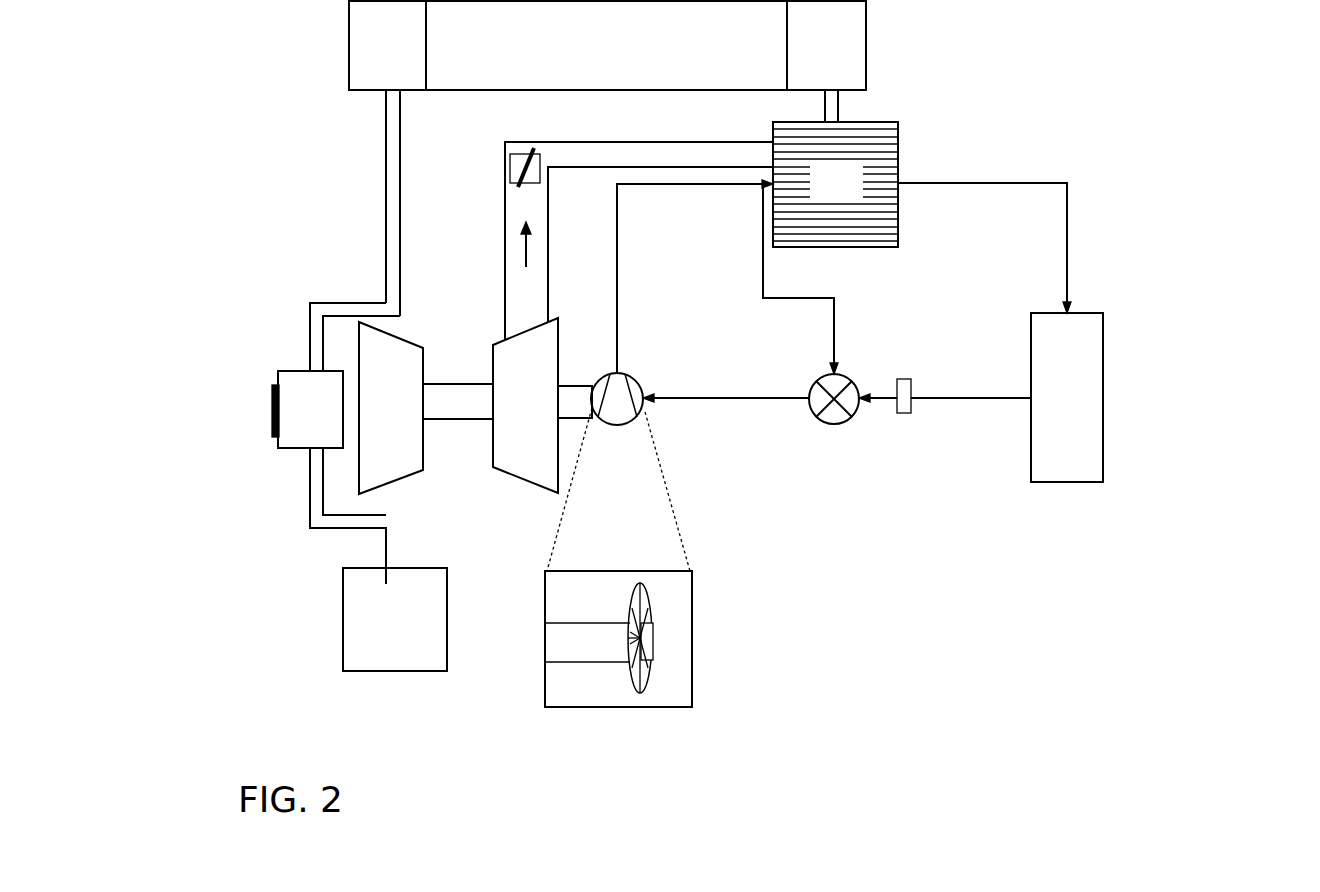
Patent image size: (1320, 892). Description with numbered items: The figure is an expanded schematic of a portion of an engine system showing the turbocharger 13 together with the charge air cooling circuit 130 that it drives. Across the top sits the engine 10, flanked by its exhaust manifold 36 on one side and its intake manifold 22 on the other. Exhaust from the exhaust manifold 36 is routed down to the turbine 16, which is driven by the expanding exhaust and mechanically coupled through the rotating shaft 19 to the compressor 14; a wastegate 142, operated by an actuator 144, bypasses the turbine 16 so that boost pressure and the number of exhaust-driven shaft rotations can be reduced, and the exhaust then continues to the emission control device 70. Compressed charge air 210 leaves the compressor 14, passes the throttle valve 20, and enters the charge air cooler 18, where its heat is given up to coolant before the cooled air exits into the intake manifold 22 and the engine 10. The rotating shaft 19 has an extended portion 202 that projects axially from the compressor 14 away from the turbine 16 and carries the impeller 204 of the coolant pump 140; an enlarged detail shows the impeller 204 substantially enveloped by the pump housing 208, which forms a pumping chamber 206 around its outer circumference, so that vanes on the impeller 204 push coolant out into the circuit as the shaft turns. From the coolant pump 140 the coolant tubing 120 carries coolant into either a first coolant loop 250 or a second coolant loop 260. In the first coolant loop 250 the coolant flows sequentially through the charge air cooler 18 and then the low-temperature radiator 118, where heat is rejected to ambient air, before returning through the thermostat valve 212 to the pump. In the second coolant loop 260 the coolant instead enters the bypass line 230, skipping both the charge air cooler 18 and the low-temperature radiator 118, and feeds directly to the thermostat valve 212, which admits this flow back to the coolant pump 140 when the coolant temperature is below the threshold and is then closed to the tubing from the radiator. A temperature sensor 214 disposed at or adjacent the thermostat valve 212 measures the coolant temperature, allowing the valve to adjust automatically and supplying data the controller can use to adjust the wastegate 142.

The engine 10 is at (594, 54).
The exhaust manifold 36 is at (374, 54).
The intake manifold 22 is at (812, 54).
The charge air cooler 18 is at (824, 195).
The turbocharger 13 is at (458, 422).
The compressor 14 is at (512, 409).
The turbine 16 is at (378, 418).
The rotating shaft 19 is at (448, 415).
The throttle valve 20 is at (510, 180).
The emission control device 70 is at (450, 582).
The low-temperature radiator 118 is at (1050, 408).
The coolant tubing 120 is at (617, 300).
The charge air cooling circuit 130 is at (1235, 70).
The coolant pump 140 is at (650, 411).
The wastegate 142 is at (294, 418).
The actuator 144 is at (272, 398).
The extended portion of rotating shaft 202 is at (580, 386).
The impeller 204 is at (643, 695).
The pumping chamber 206 is at (575, 609).
The pump housing 208 is at (693, 600).
The charge air 210 is at (510, 294).
The thermostat valve 212 is at (832, 424).
The temperature sensor 214 is at (904, 378).
The bypass line 230 is at (763, 242).
The first coolant loop 250 is at (1097, 176).
The second coolant loop 260 is at (752, 323).